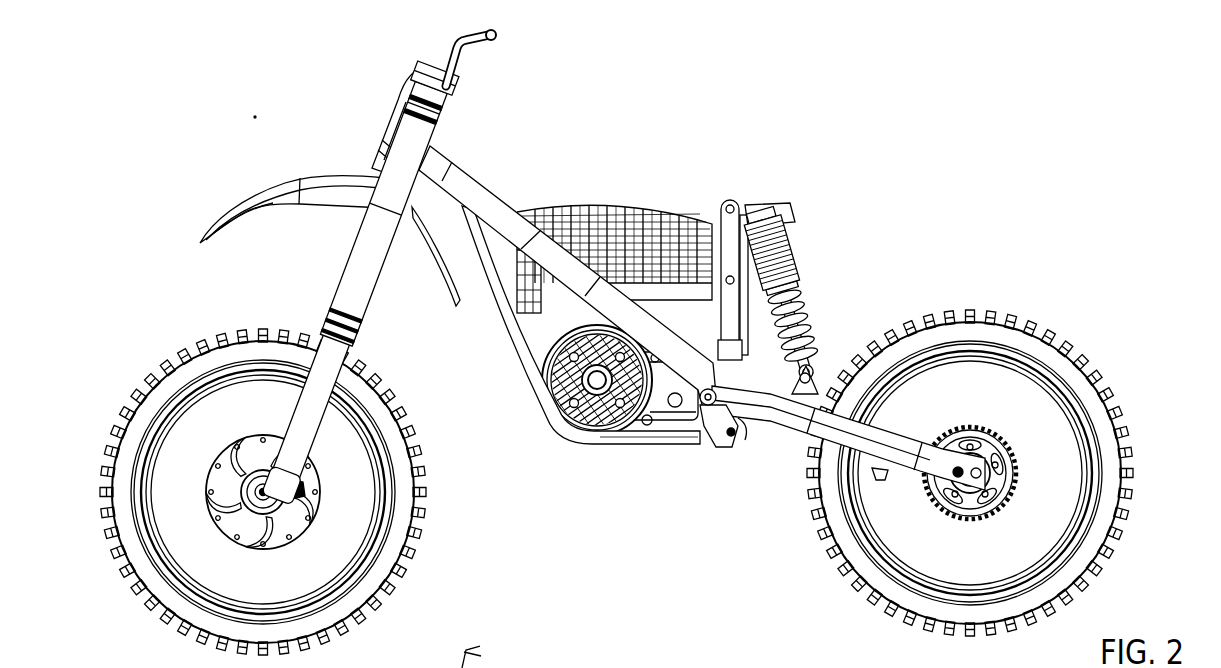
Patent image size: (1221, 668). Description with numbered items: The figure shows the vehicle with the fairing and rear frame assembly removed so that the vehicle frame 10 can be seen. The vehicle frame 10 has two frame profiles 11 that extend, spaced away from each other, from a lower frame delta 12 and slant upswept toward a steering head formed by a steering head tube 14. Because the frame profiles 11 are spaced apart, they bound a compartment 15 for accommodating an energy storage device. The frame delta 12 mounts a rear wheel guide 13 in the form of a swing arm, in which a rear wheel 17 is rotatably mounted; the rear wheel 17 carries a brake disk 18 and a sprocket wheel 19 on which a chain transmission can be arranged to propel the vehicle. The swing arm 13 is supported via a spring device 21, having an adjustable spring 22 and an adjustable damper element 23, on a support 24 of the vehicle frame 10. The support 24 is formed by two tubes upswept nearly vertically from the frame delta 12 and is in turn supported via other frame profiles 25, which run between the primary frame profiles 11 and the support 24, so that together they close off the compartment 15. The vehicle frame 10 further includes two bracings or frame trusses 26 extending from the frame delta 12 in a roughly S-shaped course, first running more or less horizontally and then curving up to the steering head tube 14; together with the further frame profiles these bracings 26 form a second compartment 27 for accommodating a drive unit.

The vehicle frame 10 is at (651, 465).
The frame profiles 11 is at (636, 552).
The lower frame delta 12 is at (731, 441).
The rear wheel guide 13 is at (810, 430).
The steering head tube 14 is at (425, 137).
The compartment 15 is at (673, 515).
The rear wheel 17 is at (1083, 350).
The brake disk 18 is at (1022, 484).
The sprocket wheel 19 is at (1013, 447).
The spring device 21 is at (790, 304).
The adjustable spring 22 is at (803, 331).
The adjustable damper element 23 is at (795, 246).
The support 24 is at (722, 222).
The frame profiles 25 is at (648, 212).
The bracings 26 is at (623, 447).
The compartment 27 is at (556, 451).